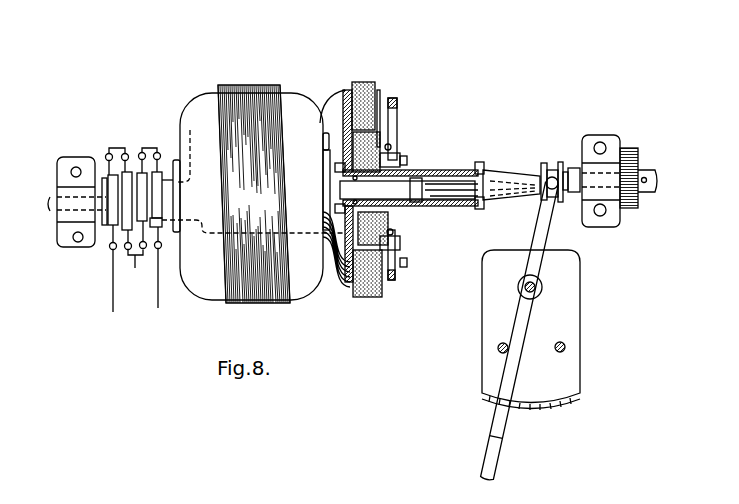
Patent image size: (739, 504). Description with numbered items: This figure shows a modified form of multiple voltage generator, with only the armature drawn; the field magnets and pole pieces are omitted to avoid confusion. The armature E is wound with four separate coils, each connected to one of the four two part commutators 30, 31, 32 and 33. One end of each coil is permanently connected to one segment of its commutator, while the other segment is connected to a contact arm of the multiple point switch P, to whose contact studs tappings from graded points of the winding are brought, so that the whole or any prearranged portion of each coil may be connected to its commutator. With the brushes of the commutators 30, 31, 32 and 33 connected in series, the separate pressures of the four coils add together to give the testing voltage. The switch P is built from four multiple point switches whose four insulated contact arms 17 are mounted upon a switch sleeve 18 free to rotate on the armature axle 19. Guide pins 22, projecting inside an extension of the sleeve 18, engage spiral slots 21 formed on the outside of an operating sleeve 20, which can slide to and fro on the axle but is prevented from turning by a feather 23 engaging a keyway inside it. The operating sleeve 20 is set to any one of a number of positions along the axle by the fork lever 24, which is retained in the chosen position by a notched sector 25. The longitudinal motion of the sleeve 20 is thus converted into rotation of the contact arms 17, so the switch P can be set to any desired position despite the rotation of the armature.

The insulated contact arm 17 is at (392, 132).
The switch sleeve 18 is at (428, 170).
The armature axle 19 is at (397, 188).
The operating sleeve 20 is at (528, 167).
The spiral slot 21 is at (543, 188).
The guide pin 22 is at (483, 165).
The feather 23 is at (455, 182).
The fork lever 24 is at (500, 460).
The notched sector 25 is at (556, 403).
The two part commutator 30 is at (115, 222).
The two part commutator 31 is at (127, 178).
The two part commutator 32 is at (137, 229).
The two part commutator 33 is at (157, 180).
The multiple point switch P is at (392, 98).
The armature E is at (256, 194).